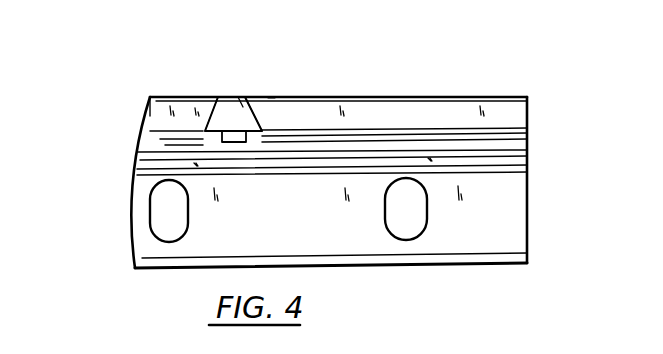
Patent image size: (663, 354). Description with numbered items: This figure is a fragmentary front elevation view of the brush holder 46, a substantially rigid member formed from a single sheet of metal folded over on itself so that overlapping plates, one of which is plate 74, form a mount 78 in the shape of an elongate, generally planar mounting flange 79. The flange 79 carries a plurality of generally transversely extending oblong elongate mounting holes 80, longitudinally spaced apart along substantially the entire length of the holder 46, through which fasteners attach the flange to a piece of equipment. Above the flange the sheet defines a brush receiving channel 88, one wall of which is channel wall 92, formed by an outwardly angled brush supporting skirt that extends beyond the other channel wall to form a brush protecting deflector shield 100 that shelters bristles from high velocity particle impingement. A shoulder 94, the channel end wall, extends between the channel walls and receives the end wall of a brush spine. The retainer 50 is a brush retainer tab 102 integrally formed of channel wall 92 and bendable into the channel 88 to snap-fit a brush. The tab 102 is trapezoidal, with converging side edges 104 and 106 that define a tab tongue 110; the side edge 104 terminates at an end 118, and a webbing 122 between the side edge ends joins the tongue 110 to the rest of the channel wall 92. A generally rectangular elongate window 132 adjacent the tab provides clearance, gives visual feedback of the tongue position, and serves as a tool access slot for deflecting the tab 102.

The brush holder 46 is at (536, 272).
The retainer 50 is at (260, 114).
The plate 74 is at (522, 200).
The mount 78 is at (108, 249).
The mounting flange 79 is at (560, 238).
The mounting holes 80 is at (145, 217).
The brush receiving channel 88 is at (492, 81).
The channel wall 92 is at (447, 98).
The shoulder 94 is at (478, 159).
The brush protecting deflector shield 100 is at (517, 106).
The brush retainer tab 102 is at (208, 124).
The side edge 104 is at (217, 99).
The side edge 106 is at (272, 98).
The tab tongue 110 is at (250, 124).
The end 118 is at (228, 97).
The webbing 122 is at (238, 97).
The window 132 is at (233, 142).